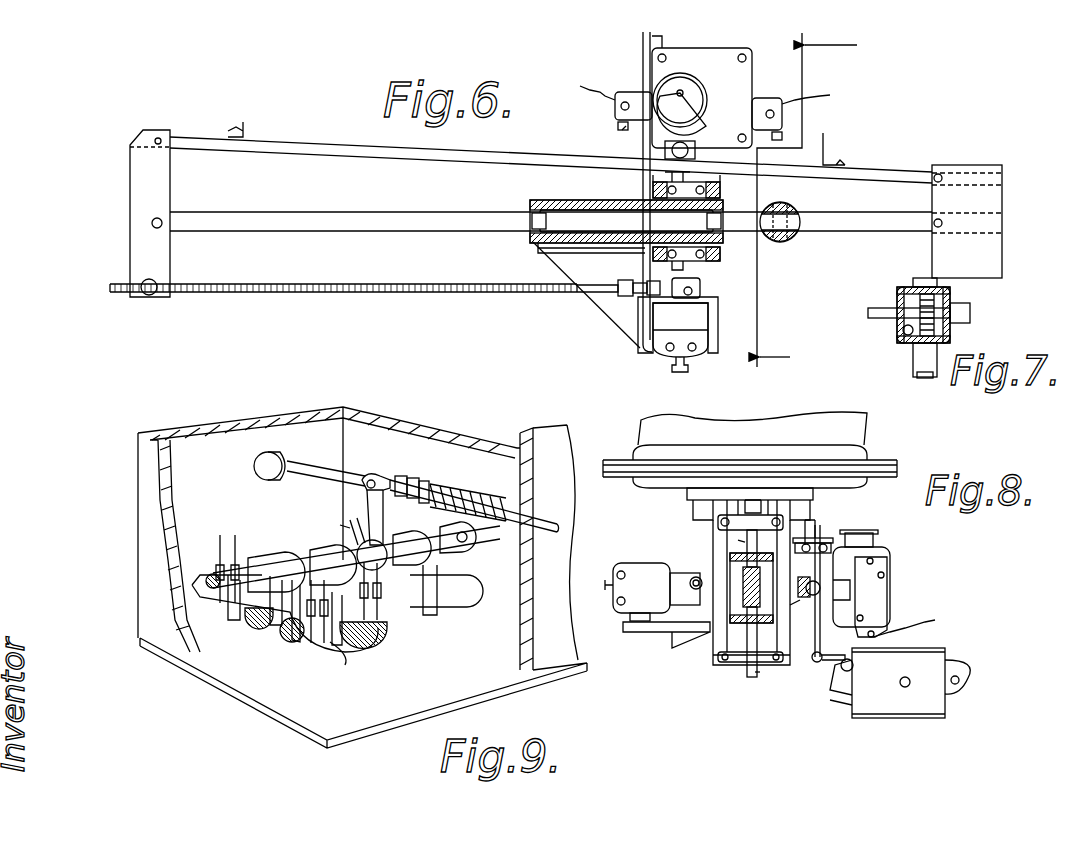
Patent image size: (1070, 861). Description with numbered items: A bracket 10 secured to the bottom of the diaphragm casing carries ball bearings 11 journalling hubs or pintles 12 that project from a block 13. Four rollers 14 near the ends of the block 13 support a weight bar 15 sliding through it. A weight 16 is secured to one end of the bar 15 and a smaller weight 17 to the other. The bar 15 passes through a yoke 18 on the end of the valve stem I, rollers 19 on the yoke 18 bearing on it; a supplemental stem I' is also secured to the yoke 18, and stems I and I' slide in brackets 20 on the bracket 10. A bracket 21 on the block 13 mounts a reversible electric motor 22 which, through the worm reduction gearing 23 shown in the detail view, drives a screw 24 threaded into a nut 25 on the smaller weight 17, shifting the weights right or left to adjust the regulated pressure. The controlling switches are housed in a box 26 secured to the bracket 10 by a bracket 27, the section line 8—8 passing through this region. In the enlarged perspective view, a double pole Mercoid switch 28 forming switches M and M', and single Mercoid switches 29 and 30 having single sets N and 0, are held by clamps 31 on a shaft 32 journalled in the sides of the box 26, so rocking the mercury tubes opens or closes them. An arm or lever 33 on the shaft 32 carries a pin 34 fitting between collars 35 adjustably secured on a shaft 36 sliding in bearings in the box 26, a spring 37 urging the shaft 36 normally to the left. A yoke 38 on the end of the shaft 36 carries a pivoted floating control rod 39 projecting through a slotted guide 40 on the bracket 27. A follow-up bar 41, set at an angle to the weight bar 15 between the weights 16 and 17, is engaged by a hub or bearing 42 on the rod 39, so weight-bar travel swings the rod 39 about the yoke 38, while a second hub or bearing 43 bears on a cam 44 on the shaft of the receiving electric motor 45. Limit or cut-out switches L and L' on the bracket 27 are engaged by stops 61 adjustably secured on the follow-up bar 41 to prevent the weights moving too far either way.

In FIG. 6, the section line 8 is at (817, 200).
In FIG. 6, the bracket 10 is at (720, 190).
In FIG. 8, the bracket 10 is at (713, 640).
In FIG. 6, the ball bearings 11 is at (653, 190).
In FIG. 6, the hubs or pintles 12 is at (682, 184).
In FIG. 6, the block 13 is at (575, 200).
In FIG. 8, the block 13 is at (773, 620).
In FIG. 6, the rollers 14 is at (530, 222).
In FIG. 8, the rollers 14 is at (752, 557).
In FIG. 6, the weight bar 15 is at (490, 218).
In FIG. 8, the weight bar 15 is at (745, 580).
In FIG. 6, the weight 16 is at (932, 196).
In FIG. 6, the smaller weight 17 is at (170, 190).
In FIG. 6, the yoke 18 is at (790, 210).
In FIG. 6, the rollers 19 is at (790, 228).
In FIG. 8, the brackets 20 is at (718, 522).
In FIG. 6, the bracket 21 is at (585, 300).
In FIG. 8, the bracket 21 is at (650, 632).
In FIG. 6, the electric motor 22 is at (678, 325).
In FIG. 8, the electric motor 22 is at (653, 592).
In FIG. 7, the worm reduction gearing 23 is at (950, 330).
In FIG. 6, the screw 24 is at (468, 292).
In FIG. 7, the screw 24 is at (870, 308).
In FIG. 6, the nut 25 is at (149, 295).
In FIG. 6, the box 26 is at (726, 42).
In FIG. 8, the box 26 is at (900, 713).
In FIG. 9, the box 26 is at (138, 480).
In FIG. 6, the bracket 27 is at (643, 45).
In FIG. 8, the bracket 27 is at (890, 553).
In FIG. 9, the double pole Mercoid switch 28 is at (318, 652).
In FIG. 9, the single Mercoid switch 29 is at (378, 640).
In FIG. 9, the single Mercoid switch 30 is at (472, 607).
In FIG. 9, the clamps 31 is at (232, 630).
In FIG. 9, the shaft 32 is at (305, 548).
In FIG. 9, the arm or lever 33 is at (383, 522).
In FIG. 9, the pin 34 is at (353, 520).
In FIG. 9, the collars 35 is at (383, 478).
In FIG. 9, the shaft 36 is at (322, 480).
In FIG. 9, the spring 37 is at (470, 490).
In FIG. 8, the yoke 38 is at (830, 668).
In FIG. 8, the floating control rod 39 is at (830, 612).
In FIG. 8, the slotted guide 40 is at (820, 540).
In FIG. 6, the follow-up bar 41 is at (520, 160).
In FIG. 8, the follow-up bar 41 is at (803, 579).
In FIG. 6, the hub or bearing 42 is at (672, 150).
In FIG. 8, the hub or bearing 42 is at (794, 607).
In FIG. 8, the hub or bearing 43 is at (808, 518).
In FIG. 6, the cam 44 is at (690, 116).
In FIG. 8, the cam 44 is at (850, 533).
In FIG. 6, the receiving electric motor 45 is at (705, 92).
In FIG. 8, the receiving electric motor 45 is at (887, 600).
In FIG. 6, the stops 61 is at (245, 130).
In FIG. 6, the valve stem I is at (611, 136).
In FIG. 8, the valve stem I is at (716, 543).
In FIG. 8, the supplemental stem I' is at (768, 683).
In FIG. 6, the limit or cut-out switch L is at (616, 117).
In FIG. 6, the limit or cut-out switch L' is at (791, 121).
In FIG. 9, the switch M is at (331, 632).
In FIG. 9, the switch M' is at (224, 554).
In FIG. 9, the set of poles N is at (383, 605).
In FIG. 9, the set of poles 0 is at (338, 520).